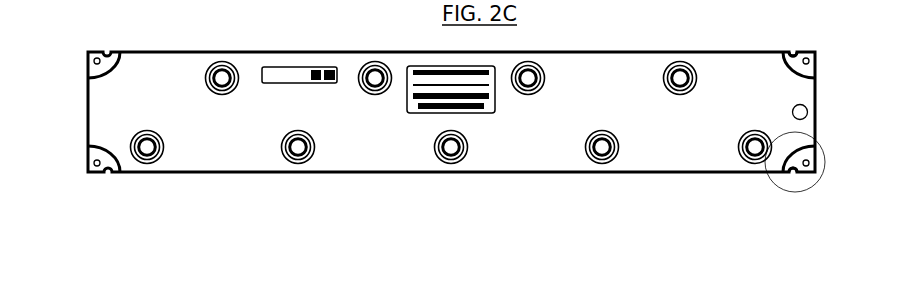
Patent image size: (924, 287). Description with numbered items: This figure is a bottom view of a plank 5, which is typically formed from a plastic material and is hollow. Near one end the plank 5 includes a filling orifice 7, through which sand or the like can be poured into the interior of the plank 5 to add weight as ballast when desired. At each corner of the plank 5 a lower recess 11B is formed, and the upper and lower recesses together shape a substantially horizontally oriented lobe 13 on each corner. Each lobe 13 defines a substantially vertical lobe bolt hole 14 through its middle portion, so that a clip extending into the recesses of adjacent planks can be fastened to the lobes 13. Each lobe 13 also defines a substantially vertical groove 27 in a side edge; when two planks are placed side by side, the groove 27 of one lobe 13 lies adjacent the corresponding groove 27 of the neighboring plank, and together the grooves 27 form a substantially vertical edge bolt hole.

The plank 5 is at (525, 184).
The filling orifice 7 is at (807, 113).
The lower recess 11B is at (793, 52).
The lobe 13 is at (817, 68).
The lobe bolt hole 14 is at (806, 160).
The groove 27 is at (793, 174).